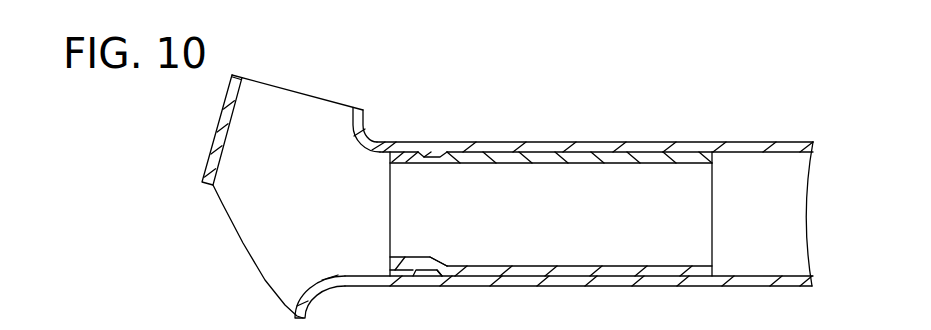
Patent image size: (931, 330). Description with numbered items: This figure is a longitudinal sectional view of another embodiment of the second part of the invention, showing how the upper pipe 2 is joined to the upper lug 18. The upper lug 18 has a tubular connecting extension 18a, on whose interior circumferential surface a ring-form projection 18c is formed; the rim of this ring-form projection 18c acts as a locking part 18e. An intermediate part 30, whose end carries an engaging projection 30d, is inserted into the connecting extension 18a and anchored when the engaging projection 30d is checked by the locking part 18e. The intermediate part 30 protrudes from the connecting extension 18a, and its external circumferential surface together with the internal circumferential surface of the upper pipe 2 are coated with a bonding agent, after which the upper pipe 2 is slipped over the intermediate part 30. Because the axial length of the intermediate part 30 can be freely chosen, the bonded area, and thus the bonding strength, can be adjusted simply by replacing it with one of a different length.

The upper lug 18 is at (216, 145).
The connecting extension 18a is at (466, 142).
The ring-form projection 18c is at (421, 155).
The locking part 18e is at (408, 256).
The upper pipe 2 is at (630, 142).
The intermediate part 30 is at (558, 266).
The engaging projection 30d is at (400, 272).